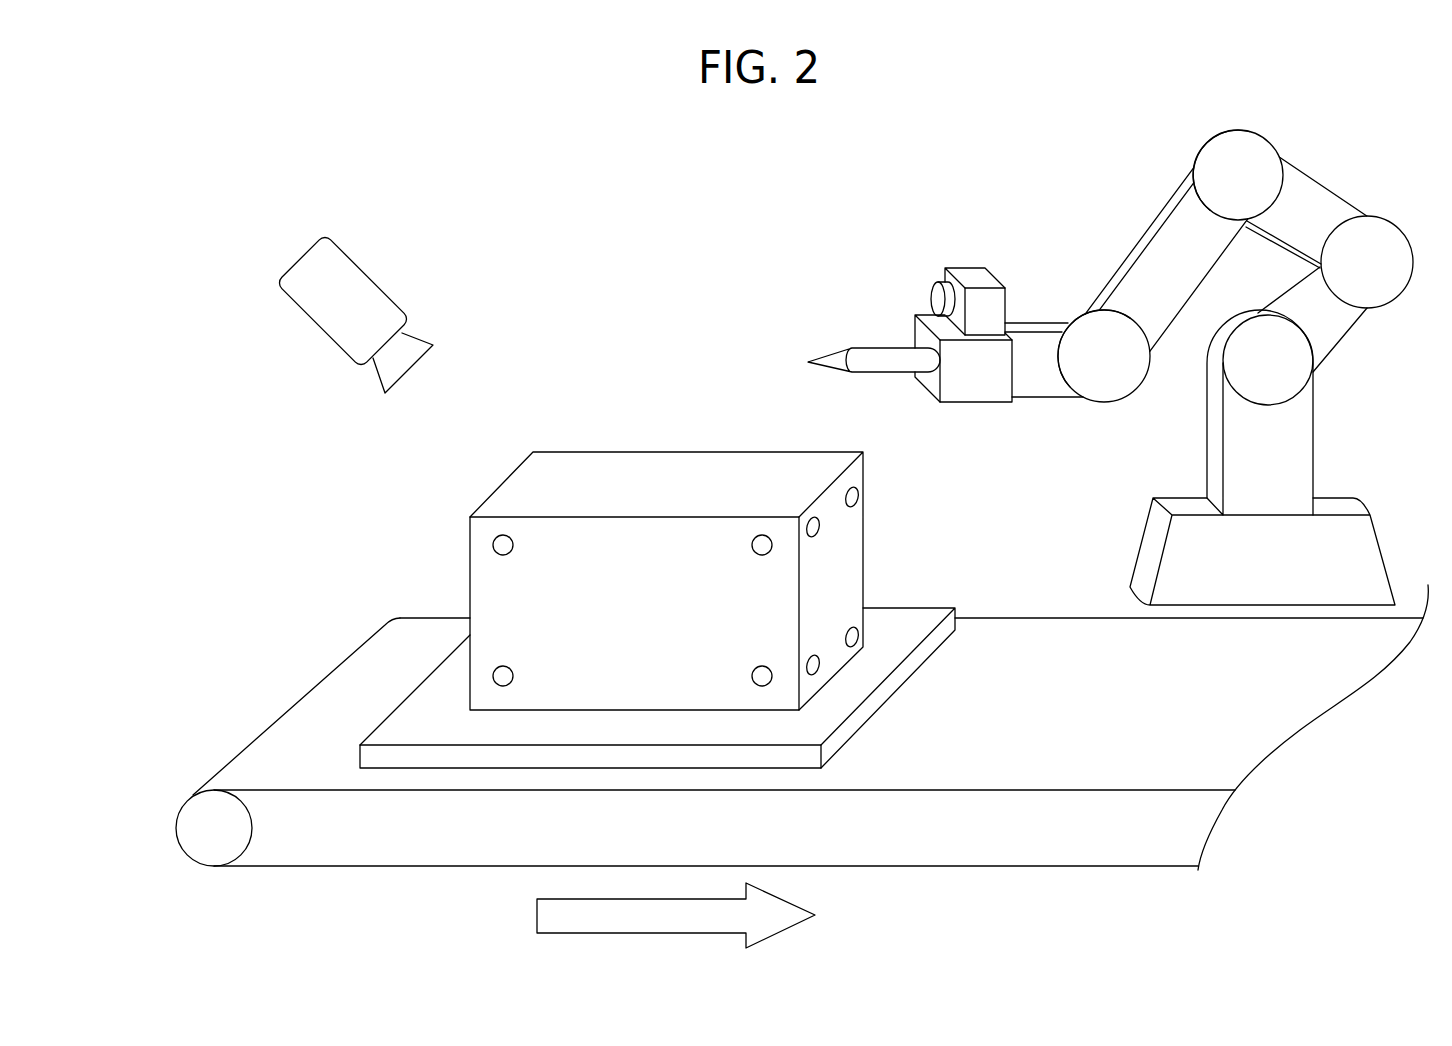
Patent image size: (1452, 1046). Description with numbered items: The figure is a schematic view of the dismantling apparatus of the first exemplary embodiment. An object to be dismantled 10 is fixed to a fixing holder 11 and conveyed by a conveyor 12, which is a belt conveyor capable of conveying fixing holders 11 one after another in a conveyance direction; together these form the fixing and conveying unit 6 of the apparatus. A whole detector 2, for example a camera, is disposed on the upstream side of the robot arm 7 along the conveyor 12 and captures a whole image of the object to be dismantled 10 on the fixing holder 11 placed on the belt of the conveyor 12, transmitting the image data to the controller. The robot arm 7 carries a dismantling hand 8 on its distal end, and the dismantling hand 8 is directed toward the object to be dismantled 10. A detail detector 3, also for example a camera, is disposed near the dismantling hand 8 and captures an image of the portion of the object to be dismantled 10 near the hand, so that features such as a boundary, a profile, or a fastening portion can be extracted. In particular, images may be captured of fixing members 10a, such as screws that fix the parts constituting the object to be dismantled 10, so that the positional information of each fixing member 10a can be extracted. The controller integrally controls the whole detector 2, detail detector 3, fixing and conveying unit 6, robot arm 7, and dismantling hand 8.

The whole detector 2 is at (375, 298).
The detail detector 3 is at (965, 263).
The fixing and conveying unit 6 is at (765, 766).
The robot arm 7 is at (1254, 147).
The dismantling hand 8 is at (878, 357).
The object to be dismantled 10 is at (628, 468).
The fixing member 10a is at (497, 673).
The fixing holder 11 is at (918, 617).
The conveyor 12 is at (293, 722).